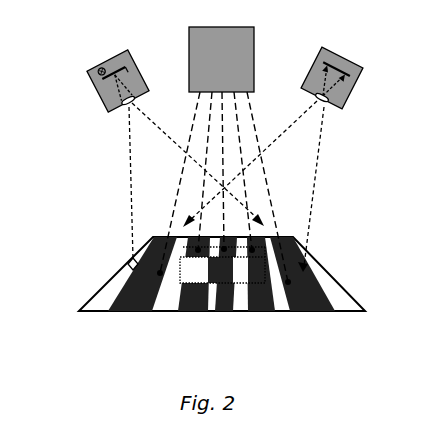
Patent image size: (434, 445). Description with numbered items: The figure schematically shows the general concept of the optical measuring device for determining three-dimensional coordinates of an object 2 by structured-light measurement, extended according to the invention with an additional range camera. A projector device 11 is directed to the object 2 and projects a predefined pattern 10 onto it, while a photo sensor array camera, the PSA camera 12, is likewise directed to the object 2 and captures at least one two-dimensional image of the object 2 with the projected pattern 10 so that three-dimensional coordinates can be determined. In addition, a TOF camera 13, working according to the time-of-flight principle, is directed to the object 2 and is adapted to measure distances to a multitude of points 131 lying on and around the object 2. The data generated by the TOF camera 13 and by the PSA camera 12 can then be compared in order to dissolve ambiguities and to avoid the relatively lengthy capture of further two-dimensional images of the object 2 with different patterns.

The predefined pattern 10 is at (215, 245).
The projector device 11 is at (148, 154).
The PSA camera 12 is at (295, 149).
The TOF camera 13 is at (218, 141).
The points 131 is at (245, 328).
The object 2 is at (193, 293).